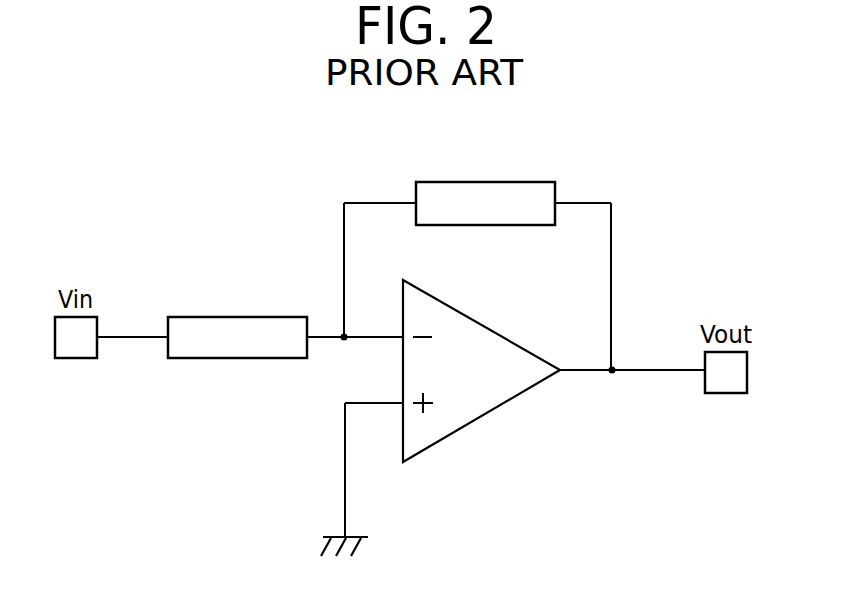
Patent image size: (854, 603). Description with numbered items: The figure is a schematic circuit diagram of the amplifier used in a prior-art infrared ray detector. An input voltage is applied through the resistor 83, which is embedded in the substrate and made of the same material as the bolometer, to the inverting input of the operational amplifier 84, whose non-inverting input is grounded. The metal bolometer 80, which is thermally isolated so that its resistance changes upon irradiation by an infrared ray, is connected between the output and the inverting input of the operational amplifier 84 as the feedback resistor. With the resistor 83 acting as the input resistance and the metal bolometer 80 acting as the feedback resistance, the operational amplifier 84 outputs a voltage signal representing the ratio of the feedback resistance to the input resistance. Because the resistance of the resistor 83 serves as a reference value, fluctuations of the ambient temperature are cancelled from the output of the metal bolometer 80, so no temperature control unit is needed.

The metal bolometer 80 is at (533, 182).
The resistor 83 is at (286, 317).
The operational amplifier 84 is at (501, 335).